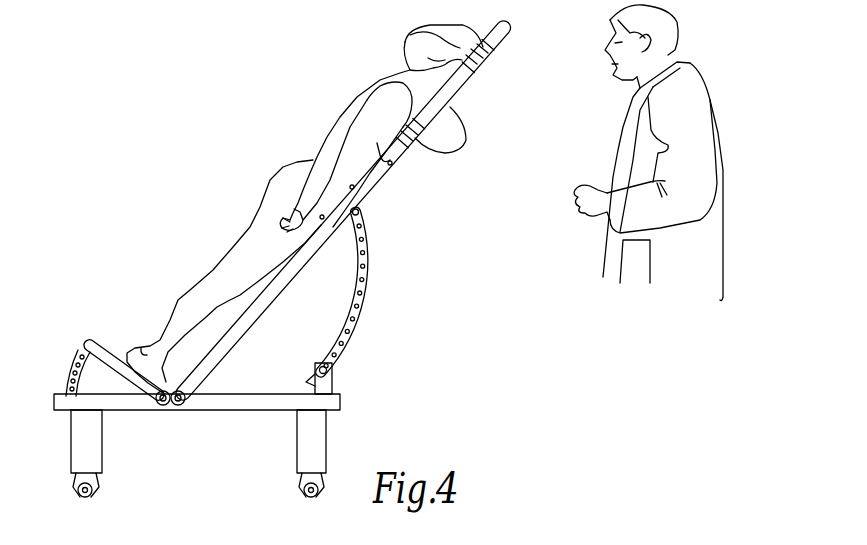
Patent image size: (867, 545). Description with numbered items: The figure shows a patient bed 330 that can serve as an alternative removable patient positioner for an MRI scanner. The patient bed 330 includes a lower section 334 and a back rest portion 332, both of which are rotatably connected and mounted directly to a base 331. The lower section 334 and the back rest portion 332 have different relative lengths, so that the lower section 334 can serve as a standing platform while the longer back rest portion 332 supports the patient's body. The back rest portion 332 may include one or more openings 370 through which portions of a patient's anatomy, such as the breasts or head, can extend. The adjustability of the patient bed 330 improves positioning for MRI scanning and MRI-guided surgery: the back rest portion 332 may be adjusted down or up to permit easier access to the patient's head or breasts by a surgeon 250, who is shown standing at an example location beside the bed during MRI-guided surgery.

The surgeon 250 is at (722, 128).
The patient bed 330 is at (315, 257).
The base 331 is at (340, 402).
The back rest portion 332 is at (367, 197).
The lower section 334 is at (97, 340).
The openings 370 is at (493, 60).